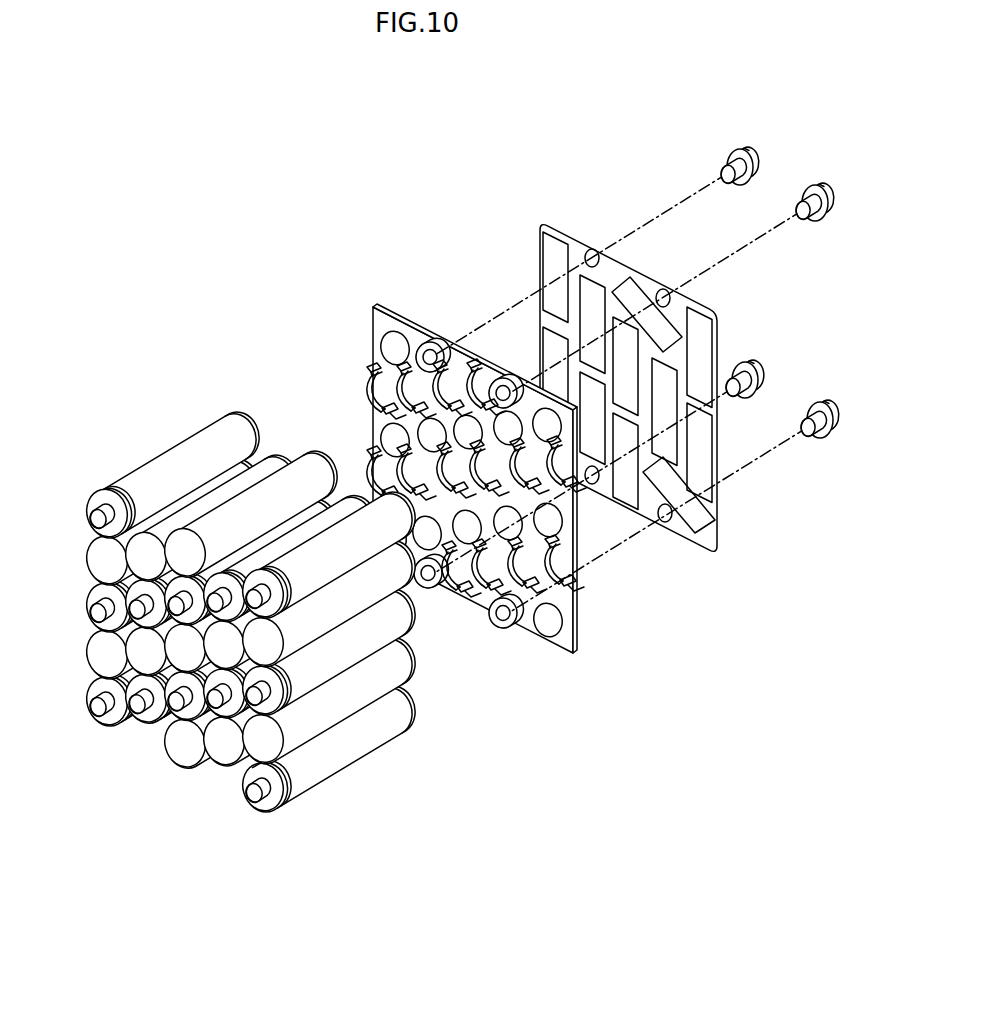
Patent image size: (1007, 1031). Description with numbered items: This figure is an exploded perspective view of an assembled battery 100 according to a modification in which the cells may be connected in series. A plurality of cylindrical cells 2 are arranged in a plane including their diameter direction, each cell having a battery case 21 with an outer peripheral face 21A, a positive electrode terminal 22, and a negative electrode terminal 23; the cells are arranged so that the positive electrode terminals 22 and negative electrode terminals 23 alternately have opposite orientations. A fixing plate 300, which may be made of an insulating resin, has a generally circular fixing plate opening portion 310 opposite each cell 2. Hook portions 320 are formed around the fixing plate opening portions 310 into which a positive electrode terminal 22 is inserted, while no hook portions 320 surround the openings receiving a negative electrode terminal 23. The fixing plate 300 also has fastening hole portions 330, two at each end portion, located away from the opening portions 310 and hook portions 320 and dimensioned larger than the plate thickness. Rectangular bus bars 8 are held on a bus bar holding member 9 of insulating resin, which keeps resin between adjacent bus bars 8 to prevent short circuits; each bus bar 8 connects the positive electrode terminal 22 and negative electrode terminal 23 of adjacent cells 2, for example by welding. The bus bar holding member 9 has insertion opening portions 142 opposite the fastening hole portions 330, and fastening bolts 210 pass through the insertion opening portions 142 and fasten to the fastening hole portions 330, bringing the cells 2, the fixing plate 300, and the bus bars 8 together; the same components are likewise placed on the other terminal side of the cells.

The power supply device 100 is at (459, 477).
The cell 2 is at (266, 644).
The battery case 21 is at (344, 781).
The outer peripheral surface of battery cell 21A is at (405, 716).
The positive electrode terminal 22 is at (257, 797).
The negative electrode terminal 23 is at (272, 762).
The fixing plate 300 is at (504, 455).
The fixing plate opening portion 310 is at (472, 358).
The hook portion 320 is at (438, 343).
The fastening hole portion 330 is at (410, 358).
The bus bar 8 is at (669, 406).
The bus bar holding member 9 is at (714, 508).
The insertion opening portion 142 is at (665, 290).
The fastening bolt 210 is at (758, 148).